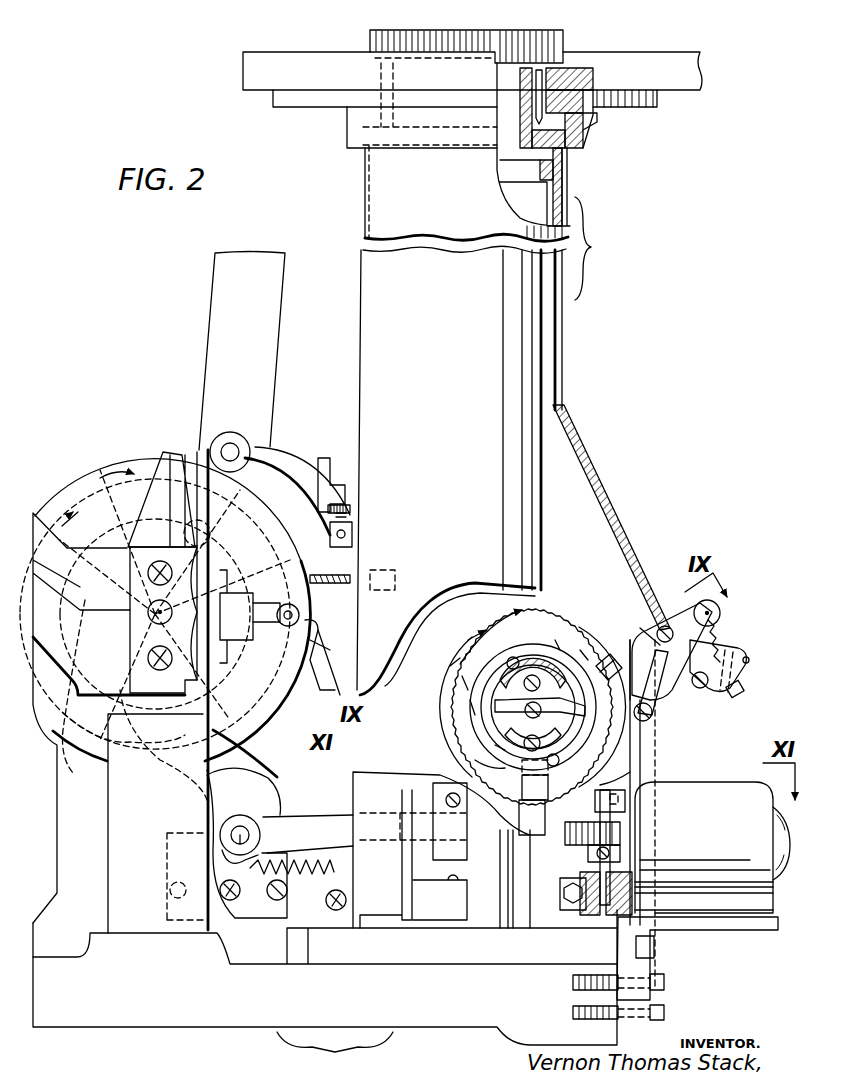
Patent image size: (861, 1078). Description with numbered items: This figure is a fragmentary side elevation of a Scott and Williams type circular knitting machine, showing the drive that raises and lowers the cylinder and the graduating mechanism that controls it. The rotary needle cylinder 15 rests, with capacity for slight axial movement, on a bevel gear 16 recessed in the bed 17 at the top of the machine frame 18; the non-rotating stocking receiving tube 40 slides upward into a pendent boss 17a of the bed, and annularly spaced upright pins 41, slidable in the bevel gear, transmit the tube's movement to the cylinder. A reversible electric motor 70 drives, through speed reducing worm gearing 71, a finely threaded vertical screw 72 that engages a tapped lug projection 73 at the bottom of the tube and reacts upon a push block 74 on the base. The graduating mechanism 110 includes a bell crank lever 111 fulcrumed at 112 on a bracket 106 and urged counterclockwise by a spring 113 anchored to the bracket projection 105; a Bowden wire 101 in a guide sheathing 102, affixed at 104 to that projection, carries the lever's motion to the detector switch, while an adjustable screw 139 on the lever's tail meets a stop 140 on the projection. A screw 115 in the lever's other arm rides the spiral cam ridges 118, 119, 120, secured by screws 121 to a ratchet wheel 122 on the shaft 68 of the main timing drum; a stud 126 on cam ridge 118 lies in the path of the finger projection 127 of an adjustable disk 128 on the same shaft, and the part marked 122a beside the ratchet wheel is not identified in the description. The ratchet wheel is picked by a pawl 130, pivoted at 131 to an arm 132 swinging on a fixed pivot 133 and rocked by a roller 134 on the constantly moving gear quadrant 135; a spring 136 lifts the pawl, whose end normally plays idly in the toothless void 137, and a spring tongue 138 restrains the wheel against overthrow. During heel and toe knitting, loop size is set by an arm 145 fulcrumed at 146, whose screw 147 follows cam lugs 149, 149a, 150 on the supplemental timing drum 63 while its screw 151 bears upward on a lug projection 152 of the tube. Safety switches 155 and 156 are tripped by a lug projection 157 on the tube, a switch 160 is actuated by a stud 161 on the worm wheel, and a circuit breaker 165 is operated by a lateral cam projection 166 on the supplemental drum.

The rotary needle cylinder 15 is at (395, 38).
The bevel gear 16 is at (590, 70).
The bed 17 is at (279, 58).
The pendent boss 17a is at (596, 124).
The machine frame 18 is at (325, 761).
The stocking receiving tube 40 is at (488, 419).
The upright pins 41 is at (388, 78).
The supplemental timing drum 63 is at (87, 486).
The drum shaft 68 is at (495, 746).
The reversible electric motor 70 is at (745, 855).
The worm gearing 71 is at (618, 832).
The vertical axis screw 72 is at (592, 918).
The tapped lateral lug projection 73 is at (564, 912).
The push block 74 is at (567, 930).
The Bowden wire 101 is at (695, 664).
The guide sheathing 102 is at (602, 490).
The sheathing attachment point 104 is at (657, 632).
The bracket projection 105 is at (720, 612).
The bracket 106 is at (646, 750).
The graduating mechanism 110 is at (492, 678).
The bell crank lever 111 is at (660, 700).
The fulcrum 112 is at (650, 722).
The spring 113 is at (728, 650).
The screw 115 is at (610, 660).
The cam ridge 118 is at (538, 638).
The cam ridge 119 is at (558, 642).
The cam ridge 120 is at (488, 724).
The screws 121 is at (462, 646).
The ratchet wheel 122 is at (584, 652).
The cam follower 122a is at (630, 772).
The stud 126 is at (462, 676).
The finger projection 127 is at (470, 700).
The disk 128 is at (475, 752).
The pawl 130 is at (313, 760).
The pivot connection 131 is at (240, 820).
The arm 132 is at (114, 687).
The fixed pivot 133 is at (236, 912).
The roller 134 is at (273, 484).
The gear quadrant 135 is at (328, 695).
The spring 136 is at (322, 892).
The toothless void 137 is at (516, 828).
The spring tongue 138 is at (509, 898).
The adjustable screw 139 is at (742, 692).
The stop 140 is at (652, 622).
The arm 145 is at (316, 490).
The fulcrum 146 is at (230, 452).
The adjustable screw 147 is at (332, 585).
The cam lug 149 is at (240, 740).
The cam lug 149a is at (290, 630).
The cam lug 150 is at (310, 626).
The adjustable screw 151 is at (352, 526).
The lateral lug projection 152 is at (345, 502).
The safety switch 155 is at (400, 810).
The safety switch 156 is at (418, 916).
The lug projection 157 is at (433, 857).
The switch 160 is at (625, 800).
The stud 161 is at (612, 822).
The circuit breaker 165 is at (237, 592).
The lateral cam projection 166 is at (240, 720).